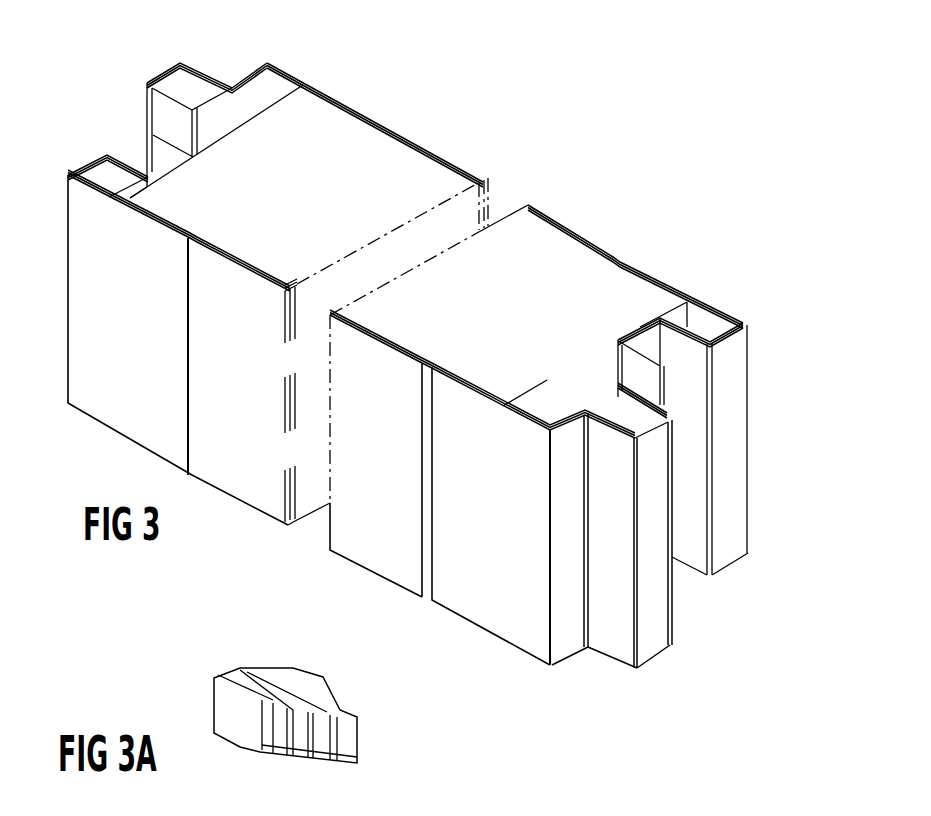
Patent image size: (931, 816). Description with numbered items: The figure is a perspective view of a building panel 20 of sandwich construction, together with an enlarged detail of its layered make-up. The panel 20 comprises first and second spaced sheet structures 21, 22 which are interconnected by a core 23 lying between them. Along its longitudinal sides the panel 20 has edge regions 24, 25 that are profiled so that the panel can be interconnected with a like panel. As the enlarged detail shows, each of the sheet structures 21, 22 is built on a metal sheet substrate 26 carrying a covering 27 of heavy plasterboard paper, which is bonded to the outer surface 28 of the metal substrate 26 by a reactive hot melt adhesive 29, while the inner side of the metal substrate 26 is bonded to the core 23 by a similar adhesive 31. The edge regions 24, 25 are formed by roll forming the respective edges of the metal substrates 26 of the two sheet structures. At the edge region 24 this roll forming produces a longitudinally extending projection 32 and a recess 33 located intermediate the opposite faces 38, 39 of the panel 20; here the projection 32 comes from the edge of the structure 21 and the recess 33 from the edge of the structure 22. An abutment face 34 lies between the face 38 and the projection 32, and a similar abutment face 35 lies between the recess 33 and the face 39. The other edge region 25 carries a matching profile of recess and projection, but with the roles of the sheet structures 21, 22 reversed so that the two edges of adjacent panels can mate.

In FIG. 3, the building panel 20 is at (532, 147).
In FIG. 3, the first sheet structure 21 is at (130, 405).
In FIG. 3, the second sheet structure 22 is at (413, 140).
In FIG. 3, the core 23 is at (388, 182).
In FIG. 3A, the core 23 is at (290, 680).
In FIG. 3, the edge region 24 is at (737, 604).
In FIG. 3, the other edge region 25 is at (80, 128).
In FIG. 3A, the metal sheet substrate 26 is at (357, 750).
In FIG. 3A, the covering 27 is at (233, 707).
In FIG. 3A, the outer surface 28 is at (293, 723).
In FIG. 3A, the reactive hot melt adhesive 29 is at (273, 740).
In FIG. 3A, the adhesive 31 is at (323, 713).
In FIG. 3, the projection 32 is at (163, 76).
In FIG. 3, the recess 33 is at (136, 152).
In FIG. 3, the abutment face 34 is at (568, 632).
In FIG. 3, the abutment face 35 is at (85, 167).
In FIG. 3, the face 38 is at (381, 520).
In FIG. 3, the face 39 is at (578, 224).